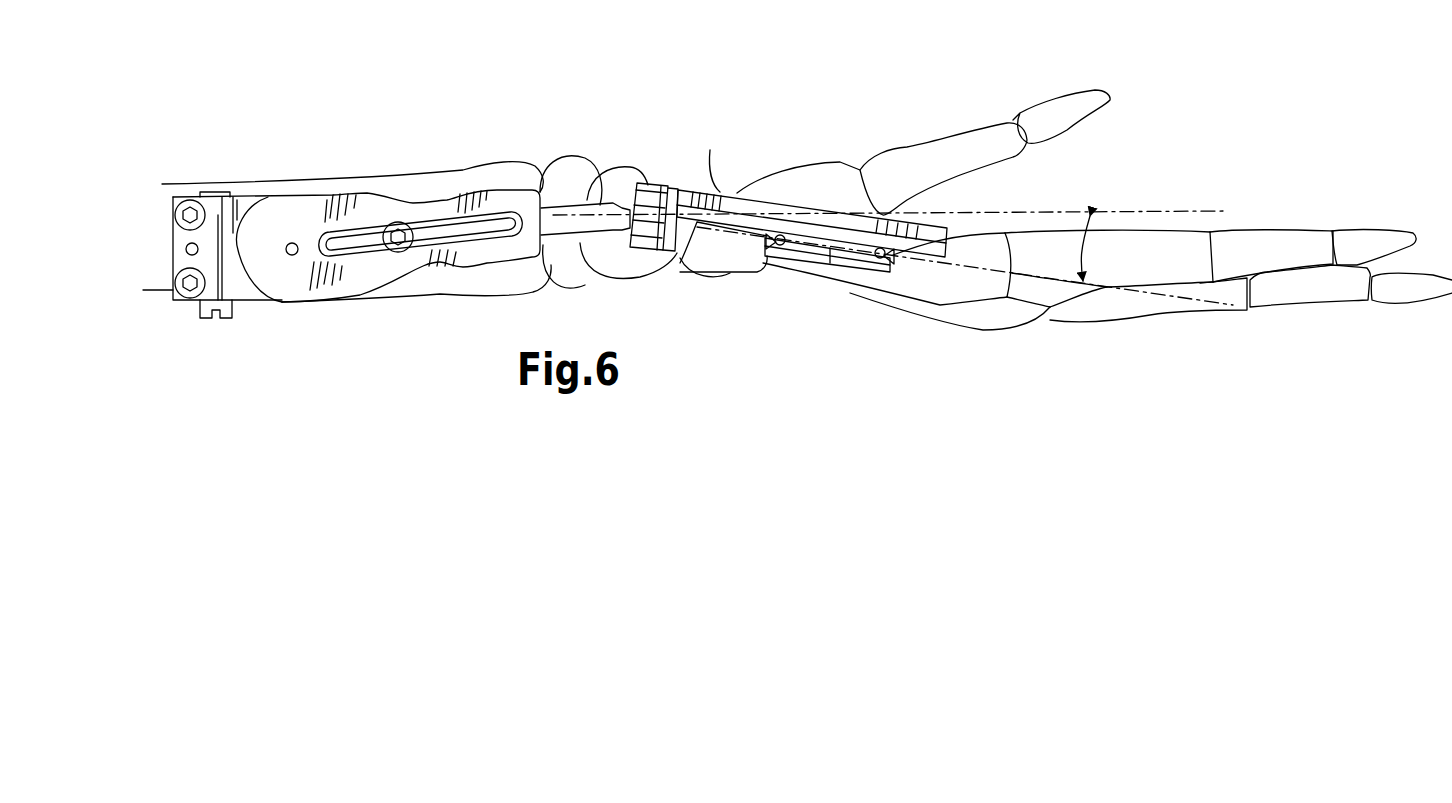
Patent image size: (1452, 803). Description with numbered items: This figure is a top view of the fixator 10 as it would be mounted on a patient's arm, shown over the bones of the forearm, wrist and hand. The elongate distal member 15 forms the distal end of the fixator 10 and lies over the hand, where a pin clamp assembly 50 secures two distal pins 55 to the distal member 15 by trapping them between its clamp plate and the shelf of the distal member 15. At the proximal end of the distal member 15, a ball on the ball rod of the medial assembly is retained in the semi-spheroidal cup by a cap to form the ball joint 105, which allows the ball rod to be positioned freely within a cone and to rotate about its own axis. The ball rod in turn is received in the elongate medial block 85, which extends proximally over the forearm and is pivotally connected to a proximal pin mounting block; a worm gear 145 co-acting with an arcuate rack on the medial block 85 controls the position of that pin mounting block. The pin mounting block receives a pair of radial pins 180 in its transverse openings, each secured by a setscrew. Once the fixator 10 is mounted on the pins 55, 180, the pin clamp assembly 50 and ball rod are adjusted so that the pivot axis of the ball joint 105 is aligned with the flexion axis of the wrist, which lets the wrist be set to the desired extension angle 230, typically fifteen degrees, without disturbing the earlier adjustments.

The fixator 10 is at (497, 118).
The distal member 15 is at (717, 187).
The pin clamp assembly 50 is at (817, 264).
The distal pins 55 is at (778, 248).
The medial block 85 is at (320, 194).
The ball joint 105 is at (640, 181).
The worm gear 145 is at (226, 322).
The radial pins 180 is at (185, 248).
The extension angle 230 is at (1093, 252).